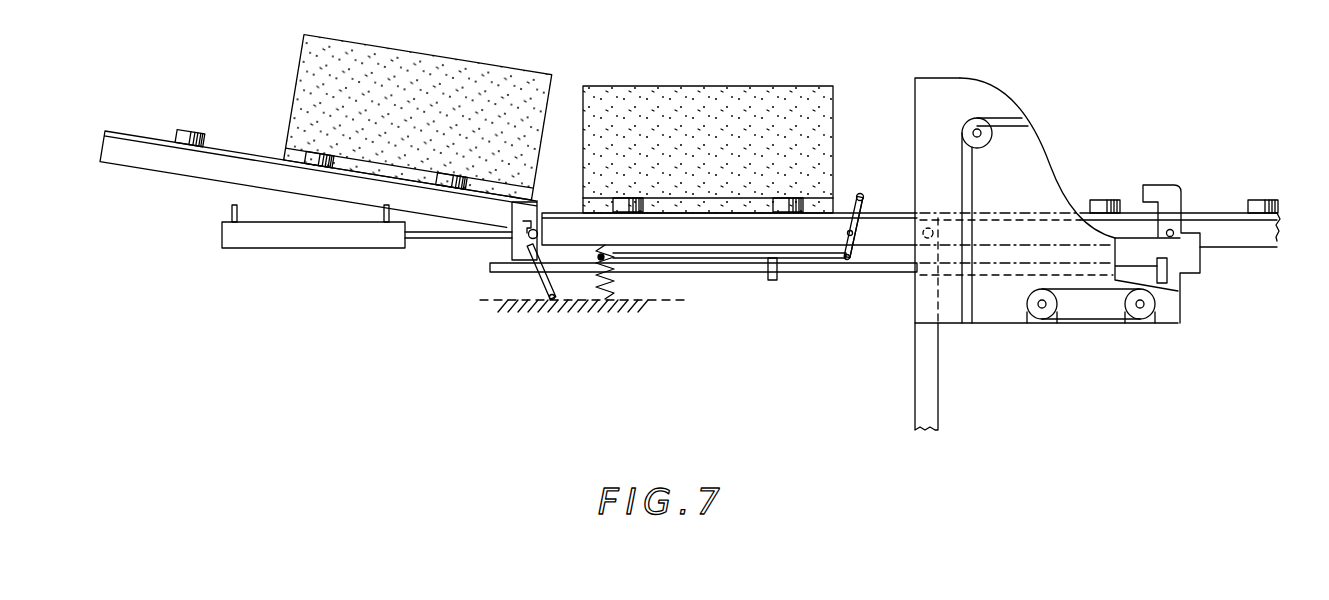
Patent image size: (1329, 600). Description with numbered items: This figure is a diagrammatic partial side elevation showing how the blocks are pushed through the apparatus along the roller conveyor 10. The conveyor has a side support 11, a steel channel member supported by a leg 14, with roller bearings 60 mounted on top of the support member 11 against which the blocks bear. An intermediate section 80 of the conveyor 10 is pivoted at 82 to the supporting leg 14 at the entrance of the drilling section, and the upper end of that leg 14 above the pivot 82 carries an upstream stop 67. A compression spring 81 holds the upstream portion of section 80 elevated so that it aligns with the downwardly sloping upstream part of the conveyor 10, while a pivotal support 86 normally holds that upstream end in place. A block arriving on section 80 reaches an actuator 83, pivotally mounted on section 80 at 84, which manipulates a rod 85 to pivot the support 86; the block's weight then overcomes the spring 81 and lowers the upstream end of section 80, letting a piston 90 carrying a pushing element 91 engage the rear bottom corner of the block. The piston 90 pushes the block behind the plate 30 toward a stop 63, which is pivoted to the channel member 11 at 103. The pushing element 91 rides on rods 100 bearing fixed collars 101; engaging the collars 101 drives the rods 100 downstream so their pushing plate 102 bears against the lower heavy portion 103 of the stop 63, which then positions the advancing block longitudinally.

The roller conveyor 10 is at (258, 104).
The roller bearings 60 is at (190, 130).
The piston 90 is at (275, 238).
The pushing element 91 is at (518, 247).
The pivotal support 86 is at (549, 288).
The compression spring 81 is at (612, 285).
The intermediate section 80 is at (693, 227).
The rod 85 is at (725, 250).
The rods 100 is at (828, 268).
The collars 101 is at (772, 282).
The actuator 83 is at (861, 195).
The pivot 84 is at (856, 235).
The leg 14 is at (927, 377).
The upstream stop 67 is at (927, 212).
The pivot 82 is at (940, 236).
The plate 30 is at (999, 110).
The pushing plate 102 is at (1162, 283).
The stop 63 is at (1158, 190).
The lower heavy portion 103 is at (1175, 229).
The side support 11 is at (1236, 234).